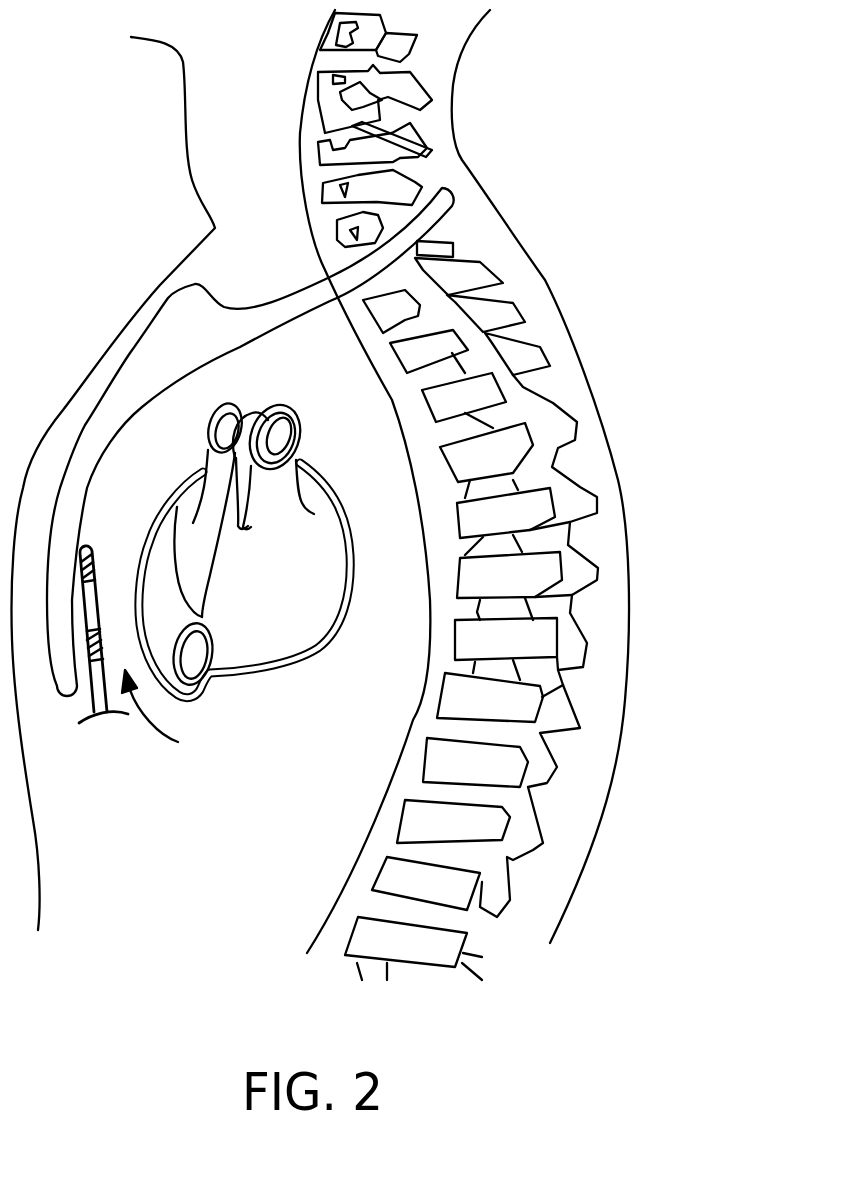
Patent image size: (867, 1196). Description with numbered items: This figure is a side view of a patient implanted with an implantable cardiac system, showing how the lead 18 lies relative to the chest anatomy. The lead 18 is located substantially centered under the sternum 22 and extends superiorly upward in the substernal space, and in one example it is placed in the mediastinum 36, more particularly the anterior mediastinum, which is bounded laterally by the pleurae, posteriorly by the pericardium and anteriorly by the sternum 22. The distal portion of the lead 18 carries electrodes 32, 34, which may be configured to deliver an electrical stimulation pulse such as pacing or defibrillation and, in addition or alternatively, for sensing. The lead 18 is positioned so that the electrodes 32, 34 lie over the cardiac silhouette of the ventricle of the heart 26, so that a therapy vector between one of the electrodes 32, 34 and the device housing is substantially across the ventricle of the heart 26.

The lead 18 is at (86, 712).
The sternum 22 is at (165, 320).
The heart 26 is at (323, 590).
The electrode 32 is at (93, 562).
The electrode 34 is at (97, 645).
The mediastinum 36 is at (166, 712).